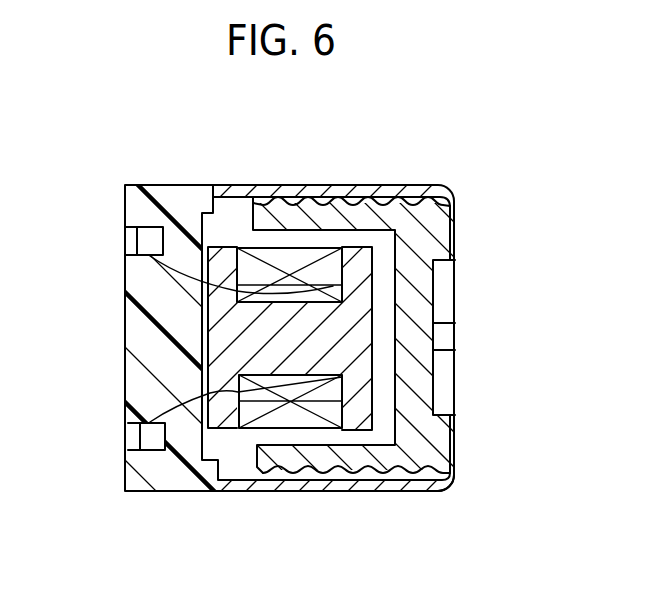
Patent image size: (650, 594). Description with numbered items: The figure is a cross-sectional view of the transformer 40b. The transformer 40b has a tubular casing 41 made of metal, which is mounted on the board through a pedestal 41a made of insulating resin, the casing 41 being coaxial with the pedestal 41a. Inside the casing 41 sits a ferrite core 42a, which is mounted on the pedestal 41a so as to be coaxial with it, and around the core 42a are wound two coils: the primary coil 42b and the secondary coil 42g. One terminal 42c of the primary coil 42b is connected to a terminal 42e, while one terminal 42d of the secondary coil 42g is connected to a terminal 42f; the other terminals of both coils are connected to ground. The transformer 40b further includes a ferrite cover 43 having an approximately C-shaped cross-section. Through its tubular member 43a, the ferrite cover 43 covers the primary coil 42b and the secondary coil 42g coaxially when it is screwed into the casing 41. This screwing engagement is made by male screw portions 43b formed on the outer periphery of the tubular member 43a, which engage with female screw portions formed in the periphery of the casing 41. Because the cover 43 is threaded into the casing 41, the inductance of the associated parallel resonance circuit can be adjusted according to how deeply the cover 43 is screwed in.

The transformer 40b is at (461, 503).
The casing 41 is at (335, 185).
The pedestal 41a is at (177, 213).
The ferrite core 42a is at (355, 306).
The primary coil 42b is at (268, 296).
The terminal of the primary coil 42c is at (172, 272).
The terminal of the secondary coil 42d is at (178, 416).
The terminal 42e is at (148, 241).
The terminal 42f is at (154, 440).
The secondary coil 42g is at (290, 262).
The ferrite cover 43 is at (457, 237).
The tubular member 43a is at (386, 458).
The male screw portions 43b is at (384, 203).